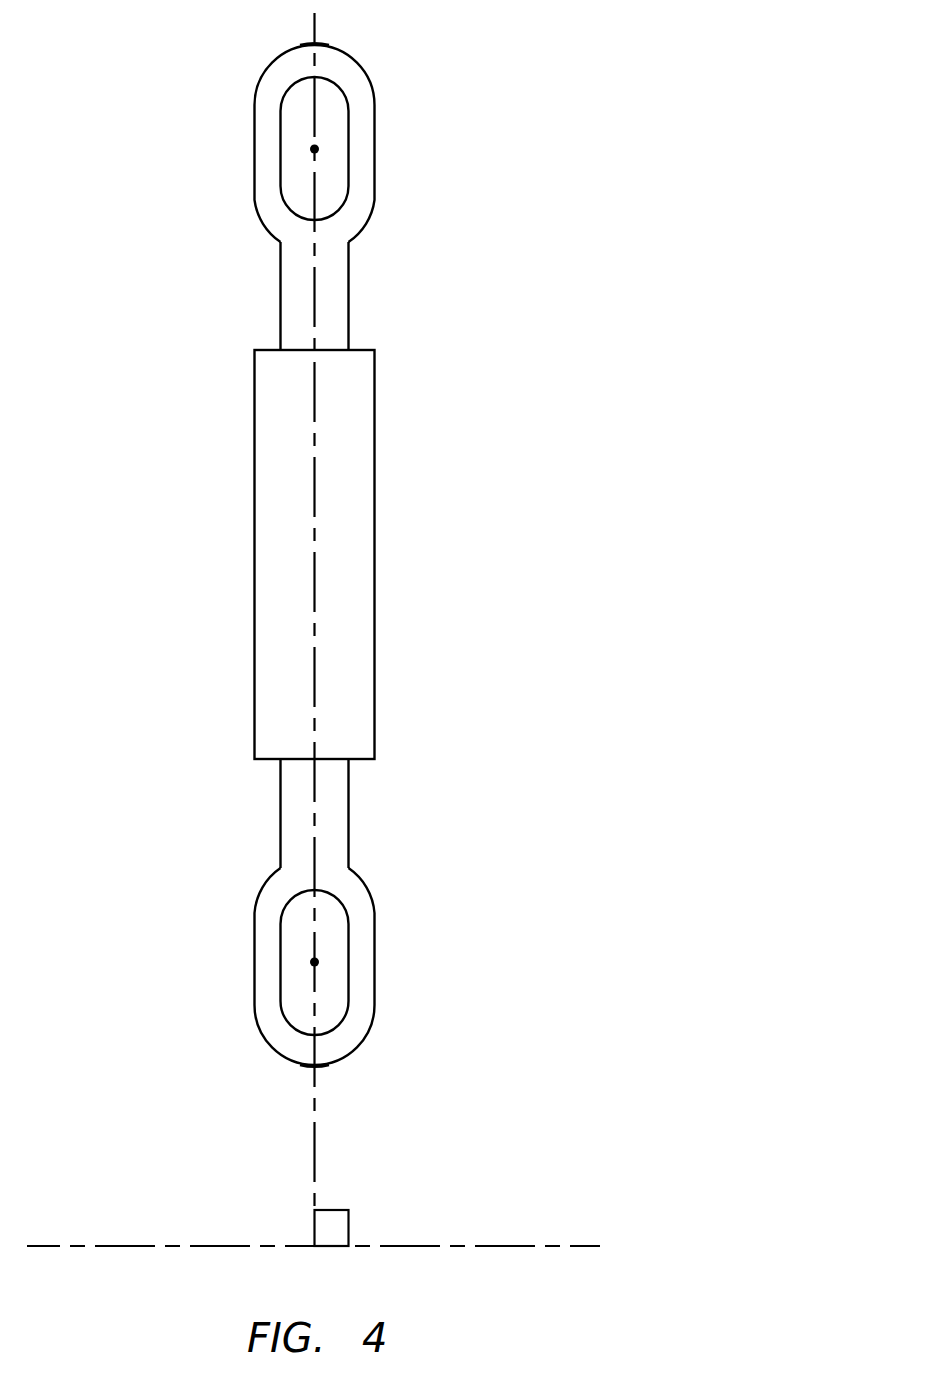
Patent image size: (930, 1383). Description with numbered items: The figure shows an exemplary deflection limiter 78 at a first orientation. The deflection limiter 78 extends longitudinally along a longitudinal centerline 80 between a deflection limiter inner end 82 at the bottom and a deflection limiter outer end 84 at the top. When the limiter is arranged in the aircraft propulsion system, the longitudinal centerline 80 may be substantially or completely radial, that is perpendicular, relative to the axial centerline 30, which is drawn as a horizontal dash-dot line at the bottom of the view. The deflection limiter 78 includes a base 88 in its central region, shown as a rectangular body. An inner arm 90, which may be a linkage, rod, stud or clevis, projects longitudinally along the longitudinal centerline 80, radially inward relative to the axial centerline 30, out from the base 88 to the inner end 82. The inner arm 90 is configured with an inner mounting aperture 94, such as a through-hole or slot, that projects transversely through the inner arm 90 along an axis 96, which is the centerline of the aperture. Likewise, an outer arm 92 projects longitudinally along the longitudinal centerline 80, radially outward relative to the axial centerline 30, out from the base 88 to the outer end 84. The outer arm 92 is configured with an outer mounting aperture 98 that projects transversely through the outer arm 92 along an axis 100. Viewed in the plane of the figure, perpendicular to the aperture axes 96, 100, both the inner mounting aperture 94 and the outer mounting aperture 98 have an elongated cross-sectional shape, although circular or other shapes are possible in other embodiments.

The axial centerline 30 is at (585, 1240).
The deflection limiter 78 is at (435, 611).
The longitudinal centerline 80 is at (314, 1155).
The deflection limiter inner end 82 is at (317, 1065).
The deflection limiter outer end 84 is at (322, 45).
The base 88 is at (382, 533).
The inner arm 90 is at (381, 979).
The outer arm 92 is at (374, 132).
The inner mounting aperture 94 is at (330, 987).
The axis 96 is at (318, 960).
The outer mounting aperture 98 is at (327, 117).
The axis 100 is at (318, 148).